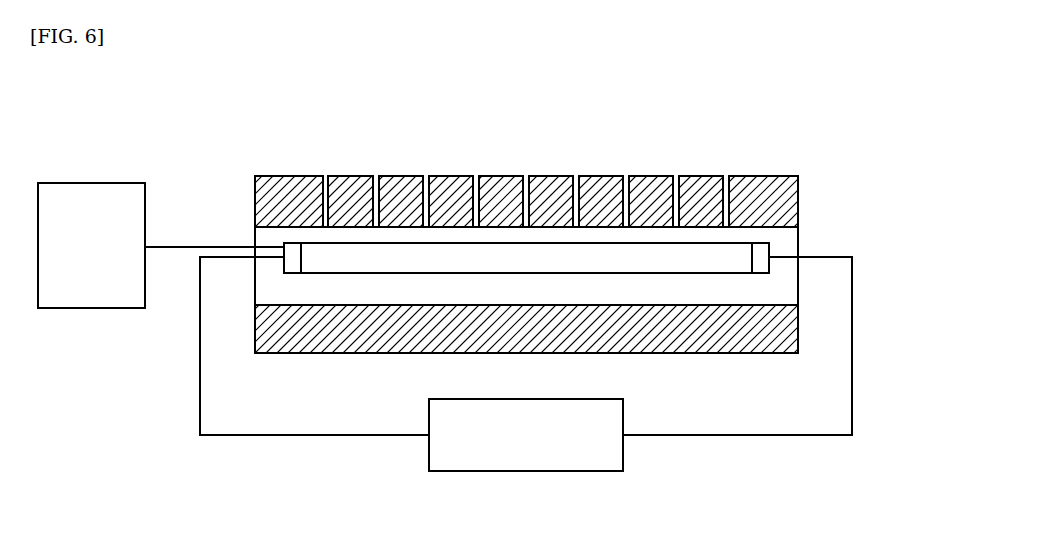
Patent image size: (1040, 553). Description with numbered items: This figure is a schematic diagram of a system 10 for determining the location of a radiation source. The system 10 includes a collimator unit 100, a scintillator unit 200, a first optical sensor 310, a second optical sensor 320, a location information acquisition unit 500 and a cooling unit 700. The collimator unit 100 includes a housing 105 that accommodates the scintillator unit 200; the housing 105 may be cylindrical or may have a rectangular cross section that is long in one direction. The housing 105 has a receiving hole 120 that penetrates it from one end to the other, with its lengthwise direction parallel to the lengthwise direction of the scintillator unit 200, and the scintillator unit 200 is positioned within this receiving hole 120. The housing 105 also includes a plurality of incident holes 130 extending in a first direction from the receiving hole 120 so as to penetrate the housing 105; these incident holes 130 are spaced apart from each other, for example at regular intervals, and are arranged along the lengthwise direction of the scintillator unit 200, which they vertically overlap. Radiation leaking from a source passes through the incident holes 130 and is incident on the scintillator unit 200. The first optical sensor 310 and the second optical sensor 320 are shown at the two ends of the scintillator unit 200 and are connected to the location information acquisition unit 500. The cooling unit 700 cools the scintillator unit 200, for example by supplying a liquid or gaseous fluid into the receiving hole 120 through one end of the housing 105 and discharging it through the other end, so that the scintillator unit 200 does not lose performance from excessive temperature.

The system 10 is at (140, 87).
The collimator unit 100 is at (248, 160).
The housing 105 is at (763, 182).
The receiving hole 120 is at (262, 236).
The incident holes 130 is at (376, 190).
The scintillator unit 200 is at (504, 256).
The first optical sensor 310 is at (760, 258).
The second optical sensor 320 is at (293, 265).
The location information acquisition unit 500 is at (531, 462).
The cooling unit 700 is at (91, 193).